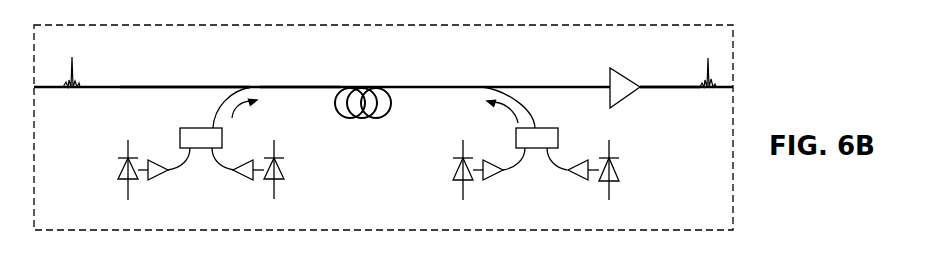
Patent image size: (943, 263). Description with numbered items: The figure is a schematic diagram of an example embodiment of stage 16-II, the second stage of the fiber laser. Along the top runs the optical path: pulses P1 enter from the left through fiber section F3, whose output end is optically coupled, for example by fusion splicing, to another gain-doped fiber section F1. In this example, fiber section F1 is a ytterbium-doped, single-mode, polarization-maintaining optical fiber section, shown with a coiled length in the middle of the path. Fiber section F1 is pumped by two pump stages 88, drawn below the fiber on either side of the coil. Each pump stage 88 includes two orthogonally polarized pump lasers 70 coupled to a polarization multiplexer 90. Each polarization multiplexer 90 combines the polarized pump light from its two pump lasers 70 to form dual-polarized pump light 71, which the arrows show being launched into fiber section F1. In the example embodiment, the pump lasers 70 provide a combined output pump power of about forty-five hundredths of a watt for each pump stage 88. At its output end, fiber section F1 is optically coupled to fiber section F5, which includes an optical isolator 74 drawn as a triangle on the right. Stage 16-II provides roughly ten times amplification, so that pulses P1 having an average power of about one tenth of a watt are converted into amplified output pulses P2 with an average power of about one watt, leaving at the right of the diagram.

The stage 16-II is at (371, 212).
The polarized pump laser 70 is at (103, 176).
The dual-polarized pump light 71 is at (240, 112).
The optical isolator 74 is at (610, 72).
The pump stage 88 is at (198, 185).
The polarization multiplexer 90 is at (192, 128).
The pulses P1 is at (74, 65).
The amplified output pulses P2 is at (707, 60).
The gain-doped fiber section F1 is at (306, 87).
The fiber section F3 is at (184, 87).
The fiber section F5 is at (648, 87).